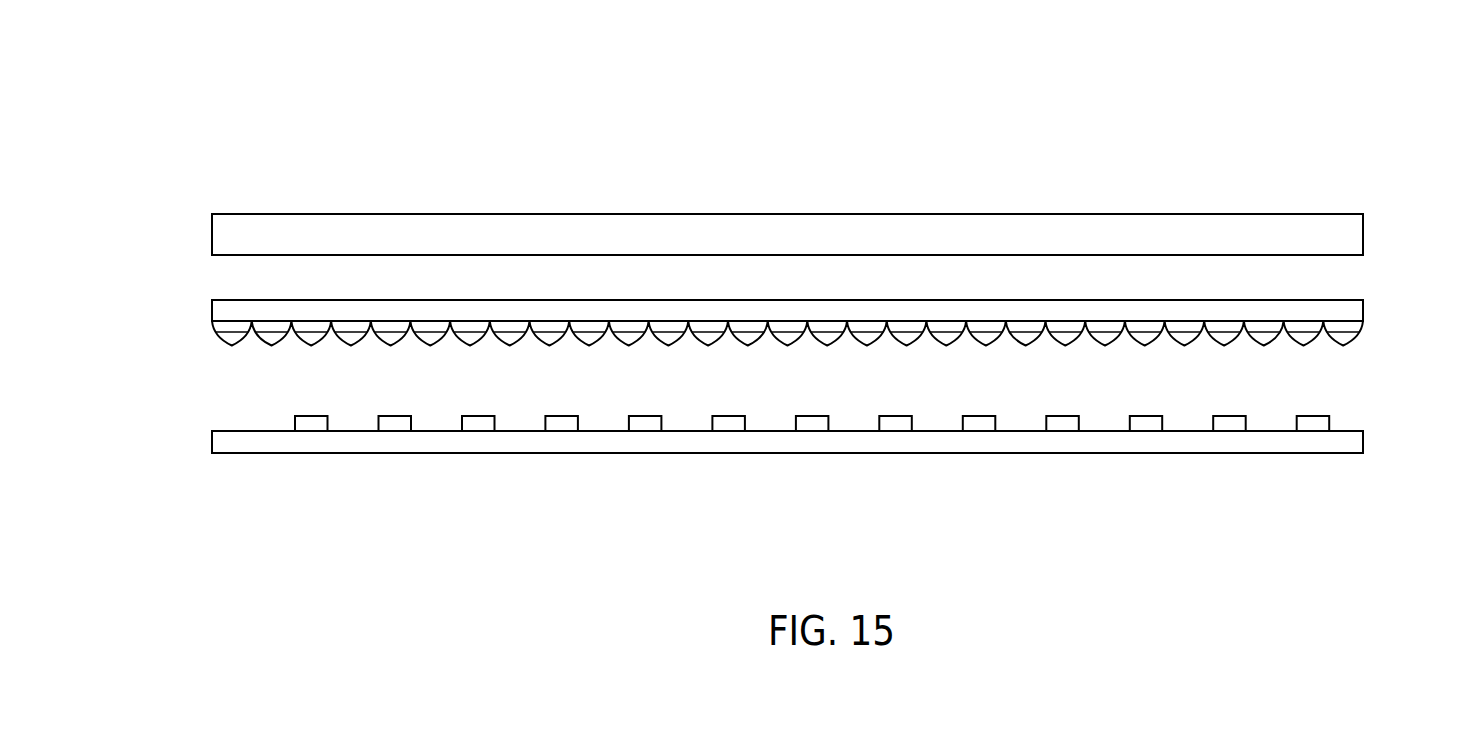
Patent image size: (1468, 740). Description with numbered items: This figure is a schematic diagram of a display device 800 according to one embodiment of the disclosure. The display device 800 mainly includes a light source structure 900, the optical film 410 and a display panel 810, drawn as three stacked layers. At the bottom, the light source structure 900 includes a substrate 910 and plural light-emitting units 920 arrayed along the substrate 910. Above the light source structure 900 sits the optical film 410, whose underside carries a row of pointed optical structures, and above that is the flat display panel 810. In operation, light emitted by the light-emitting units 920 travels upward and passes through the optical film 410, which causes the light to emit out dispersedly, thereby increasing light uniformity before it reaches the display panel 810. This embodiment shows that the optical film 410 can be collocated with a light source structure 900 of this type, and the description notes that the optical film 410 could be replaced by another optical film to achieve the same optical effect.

The display device 800 is at (172, 78).
The display panel 810 is at (262, 228).
The optical film 410 is at (1340, 299).
The light source structure 900 is at (721, 469).
The substrate 910 is at (565, 443).
The light-emitting units 920 is at (726, 424).